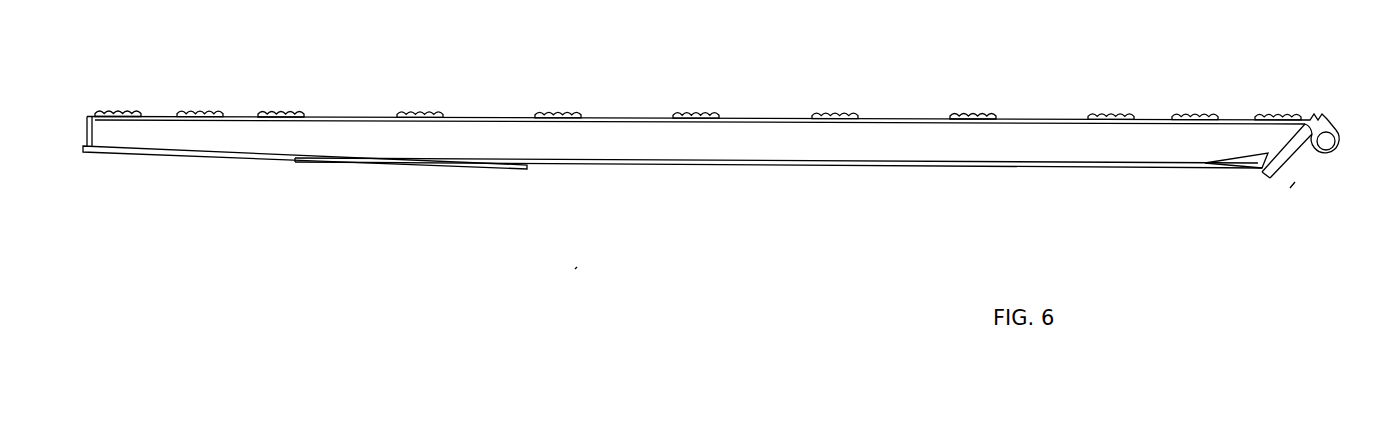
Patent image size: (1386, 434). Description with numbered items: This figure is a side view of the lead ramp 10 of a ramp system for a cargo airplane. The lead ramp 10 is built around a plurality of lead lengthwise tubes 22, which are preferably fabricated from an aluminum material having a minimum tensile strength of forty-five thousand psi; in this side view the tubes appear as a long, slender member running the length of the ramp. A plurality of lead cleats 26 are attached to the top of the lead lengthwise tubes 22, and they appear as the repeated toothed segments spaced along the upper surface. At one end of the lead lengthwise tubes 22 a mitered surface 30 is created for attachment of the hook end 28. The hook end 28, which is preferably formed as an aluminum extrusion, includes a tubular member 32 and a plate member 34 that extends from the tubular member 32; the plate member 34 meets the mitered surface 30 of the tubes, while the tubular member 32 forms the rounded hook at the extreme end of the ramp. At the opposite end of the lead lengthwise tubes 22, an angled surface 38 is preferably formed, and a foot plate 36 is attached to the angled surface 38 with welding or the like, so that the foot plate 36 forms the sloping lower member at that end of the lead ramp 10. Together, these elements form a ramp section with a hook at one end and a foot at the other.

The lead ramp 10 is at (577, 267).
The lead lengthwise tube 22 is at (373, 148).
The lead cleat 26 is at (436, 114).
The hook end 28 is at (1290, 188).
The mitered surface 30 is at (1258, 162).
The tubular member 32 is at (1324, 155).
The plate member 34 is at (1281, 149).
The foot plate 36 is at (235, 158).
The angled surface 38 is at (297, 157).